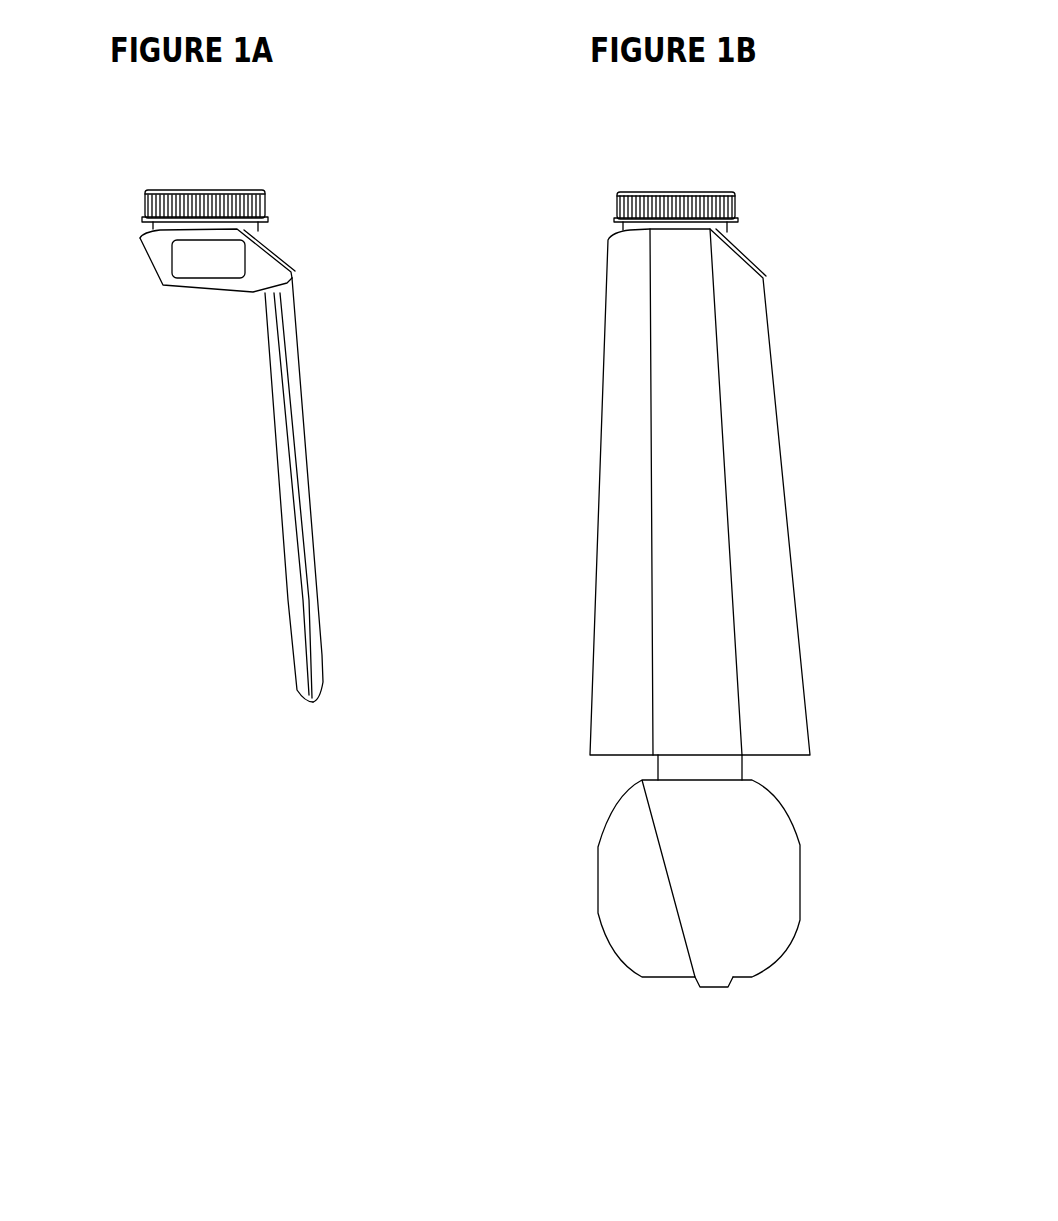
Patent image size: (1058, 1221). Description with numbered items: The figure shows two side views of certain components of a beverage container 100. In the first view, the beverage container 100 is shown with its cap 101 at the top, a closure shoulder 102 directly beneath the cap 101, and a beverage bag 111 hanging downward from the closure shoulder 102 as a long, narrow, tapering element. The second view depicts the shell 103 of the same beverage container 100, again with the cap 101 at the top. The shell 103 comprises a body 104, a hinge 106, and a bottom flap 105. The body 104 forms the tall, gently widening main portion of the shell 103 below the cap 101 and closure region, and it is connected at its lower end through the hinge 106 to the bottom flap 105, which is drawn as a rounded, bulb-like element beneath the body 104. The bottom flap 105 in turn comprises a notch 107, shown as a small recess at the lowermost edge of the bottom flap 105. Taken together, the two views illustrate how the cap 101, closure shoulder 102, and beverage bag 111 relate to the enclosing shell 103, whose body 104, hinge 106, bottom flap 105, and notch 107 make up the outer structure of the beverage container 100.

In FIG. 1A, the beverage container 100 is at (315, 272).
In FIG. 1B, the beverage container 100 is at (565, 280).
In FIG. 1A, the cap 101 is at (129, 184).
In FIG. 1A, the closure shoulder 102 is at (151, 252).
In FIG. 1B, the shell 103 is at (563, 437).
In FIG. 1B, the body 104 is at (711, 587).
In FIG. 1B, the bottom flap 105 is at (734, 876).
In FIG. 1B, the hinge 106 is at (734, 758).
In FIG. 1B, the notch 107 is at (745, 980).
In FIG. 1A, the beverage bag 111 is at (332, 540).